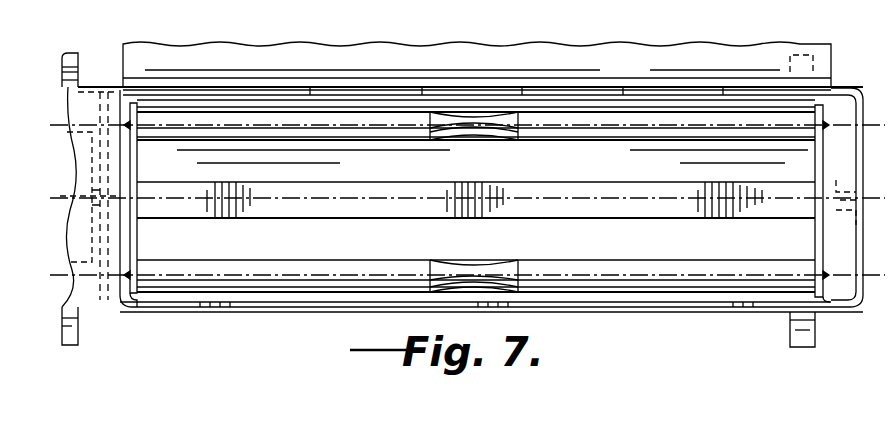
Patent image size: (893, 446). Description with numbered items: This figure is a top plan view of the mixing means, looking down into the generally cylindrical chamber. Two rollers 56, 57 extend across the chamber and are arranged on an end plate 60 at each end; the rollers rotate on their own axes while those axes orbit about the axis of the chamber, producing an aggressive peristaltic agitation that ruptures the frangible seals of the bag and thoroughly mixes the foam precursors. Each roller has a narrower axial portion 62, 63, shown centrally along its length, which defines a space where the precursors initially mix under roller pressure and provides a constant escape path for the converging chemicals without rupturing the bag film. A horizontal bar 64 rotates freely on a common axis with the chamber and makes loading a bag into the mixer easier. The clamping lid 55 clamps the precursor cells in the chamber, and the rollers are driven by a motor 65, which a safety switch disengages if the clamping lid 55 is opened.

The clamping lid 55 is at (765, 53).
The roller 56 is at (163, 118).
The roller 57 is at (197, 210).
The end plate 60 is at (163, 248).
The narrower axial portion 62 is at (518, 135).
The narrower axial portion 63 is at (500, 270).
The horizontal bar 64 is at (433, 197).
The motor 65 is at (80, 163).